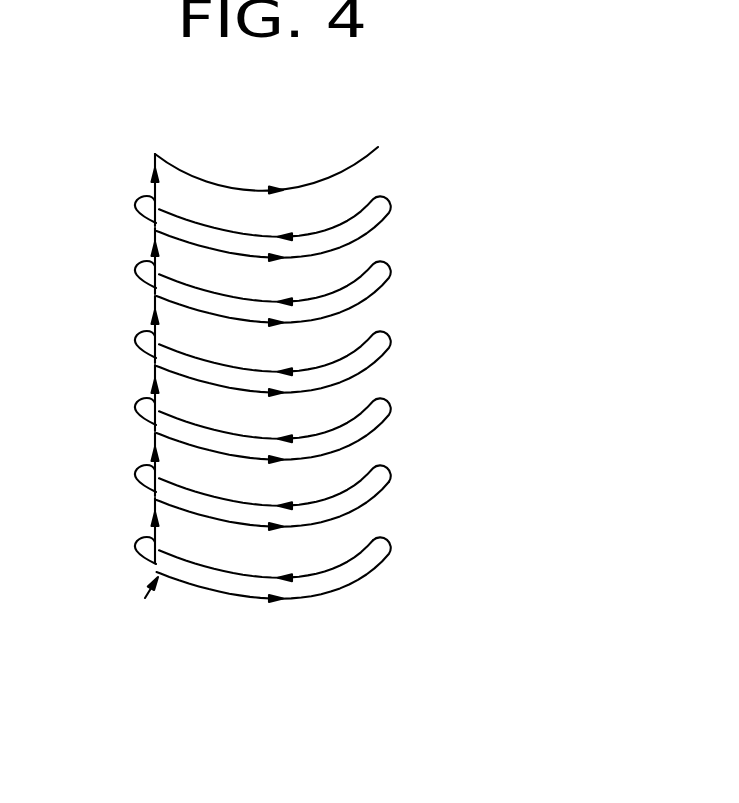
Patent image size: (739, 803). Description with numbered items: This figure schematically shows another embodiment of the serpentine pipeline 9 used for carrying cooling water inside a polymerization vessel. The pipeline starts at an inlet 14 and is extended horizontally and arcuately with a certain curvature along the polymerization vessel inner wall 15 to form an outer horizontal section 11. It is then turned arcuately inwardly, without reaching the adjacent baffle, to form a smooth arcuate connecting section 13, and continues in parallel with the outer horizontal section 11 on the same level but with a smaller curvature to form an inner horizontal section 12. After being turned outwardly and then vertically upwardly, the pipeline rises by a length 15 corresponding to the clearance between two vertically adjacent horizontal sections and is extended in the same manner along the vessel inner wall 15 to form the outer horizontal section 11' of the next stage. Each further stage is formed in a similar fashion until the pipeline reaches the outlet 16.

The serpentine pipeline 9 is at (129, 338).
The outer horizontal section 11 is at (274, 594).
The outer horizontal section 11' is at (273, 523).
The inner horizontal section 12 is at (256, 579).
The connecting section 13 is at (388, 267).
The inlet 14 is at (143, 620).
The polymerization vessel inner wall 15 is at (155, 510).
The outlet 16 is at (292, 132).